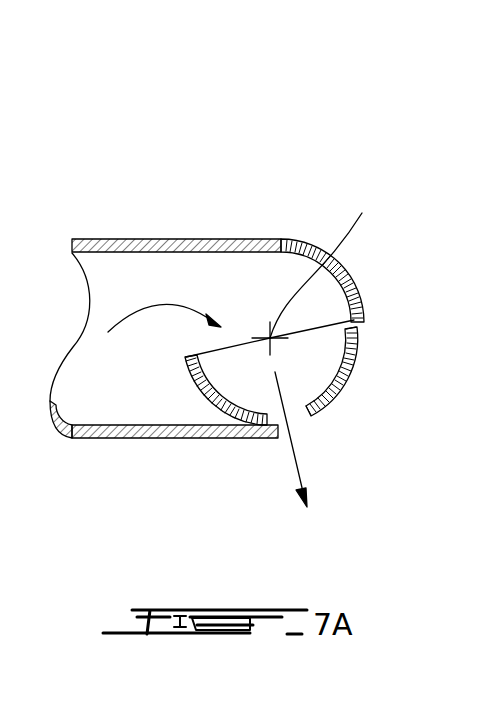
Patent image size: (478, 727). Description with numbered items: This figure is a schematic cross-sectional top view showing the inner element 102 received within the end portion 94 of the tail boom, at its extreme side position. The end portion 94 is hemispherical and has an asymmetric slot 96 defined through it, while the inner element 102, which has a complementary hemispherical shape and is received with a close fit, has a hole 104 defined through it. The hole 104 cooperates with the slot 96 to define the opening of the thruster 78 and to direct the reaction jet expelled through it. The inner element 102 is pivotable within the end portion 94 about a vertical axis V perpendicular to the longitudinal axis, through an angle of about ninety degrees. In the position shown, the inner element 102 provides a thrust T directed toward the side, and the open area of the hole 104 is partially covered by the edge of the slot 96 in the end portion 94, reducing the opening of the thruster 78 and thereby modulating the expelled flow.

The thruster 78 is at (275, 189).
The end portion 94 is at (194, 239).
The asymmetric slot 96 is at (364, 322).
The inner element 102 is at (325, 363).
The hole 104 is at (293, 418).
The vertical axis V is at (278, 273).
The thrust T is at (293, 462).